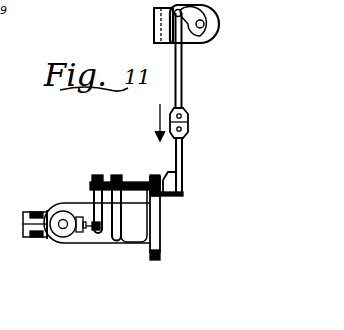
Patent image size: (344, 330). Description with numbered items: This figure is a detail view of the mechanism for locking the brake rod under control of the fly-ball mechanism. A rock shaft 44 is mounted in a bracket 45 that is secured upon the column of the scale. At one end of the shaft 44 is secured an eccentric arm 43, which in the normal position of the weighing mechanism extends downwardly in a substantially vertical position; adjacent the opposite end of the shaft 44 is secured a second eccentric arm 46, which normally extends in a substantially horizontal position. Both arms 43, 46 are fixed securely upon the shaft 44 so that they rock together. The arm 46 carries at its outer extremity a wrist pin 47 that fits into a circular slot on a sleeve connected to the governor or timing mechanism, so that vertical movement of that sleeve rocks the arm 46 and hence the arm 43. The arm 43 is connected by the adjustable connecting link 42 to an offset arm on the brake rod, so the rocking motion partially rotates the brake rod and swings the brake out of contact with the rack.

The adjustable connecting link 42 is at (190, 124).
The eccentric arm 43 is at (172, 180).
The rock shaft 44 is at (147, 182).
The bracket 45 is at (135, 239).
The eccentric arm 46 is at (96, 203).
The wrist pin 47 is at (100, 228).